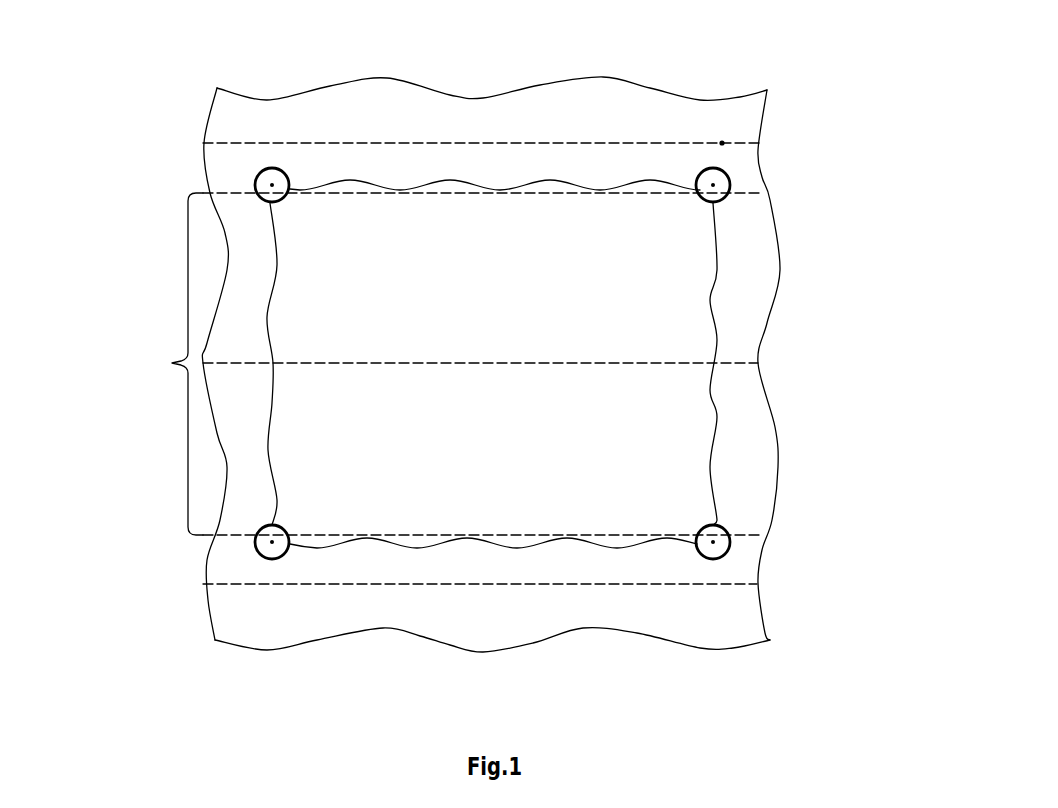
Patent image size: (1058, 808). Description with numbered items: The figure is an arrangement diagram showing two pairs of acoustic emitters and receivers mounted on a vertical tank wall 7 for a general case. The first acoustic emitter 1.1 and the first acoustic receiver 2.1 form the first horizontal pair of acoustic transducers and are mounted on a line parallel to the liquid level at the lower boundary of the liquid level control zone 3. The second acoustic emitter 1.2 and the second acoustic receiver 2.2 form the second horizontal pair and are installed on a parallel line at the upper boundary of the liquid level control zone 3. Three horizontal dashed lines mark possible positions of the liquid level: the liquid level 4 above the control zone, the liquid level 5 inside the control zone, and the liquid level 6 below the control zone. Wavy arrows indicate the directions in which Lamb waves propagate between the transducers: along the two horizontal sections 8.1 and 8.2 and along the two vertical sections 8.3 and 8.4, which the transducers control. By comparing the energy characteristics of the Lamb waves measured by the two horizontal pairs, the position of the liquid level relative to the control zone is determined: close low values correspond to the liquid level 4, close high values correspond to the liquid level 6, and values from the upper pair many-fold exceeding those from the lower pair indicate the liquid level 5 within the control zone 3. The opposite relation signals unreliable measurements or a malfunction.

The first acoustic emitter 1.1 is at (272, 542).
The second acoustic emitter 1.2 is at (713, 185).
The first acoustic receiver 2.1 is at (272, 185).
The second acoustic receiver 2.2 is at (713, 542).
The liquid level control zone 3 is at (172, 363).
The liquid level (above the control zone) 4 is at (722, 143).
The liquid level (in the control zone) 5 is at (682, 365).
The liquid level (below the control zone) 6 is at (727, 584).
The vertical tank wall 7 is at (537, 158).
The horizontal section of Lamb wave propagation 8.1 is at (392, 185).
The horizontal section of Lamb wave propagation 8.2 is at (493, 542).
The vertical section of Lamb wave propagation 8.3 is at (272, 404).
The vertical section of Lamb wave propagation 8.4 is at (713, 445).